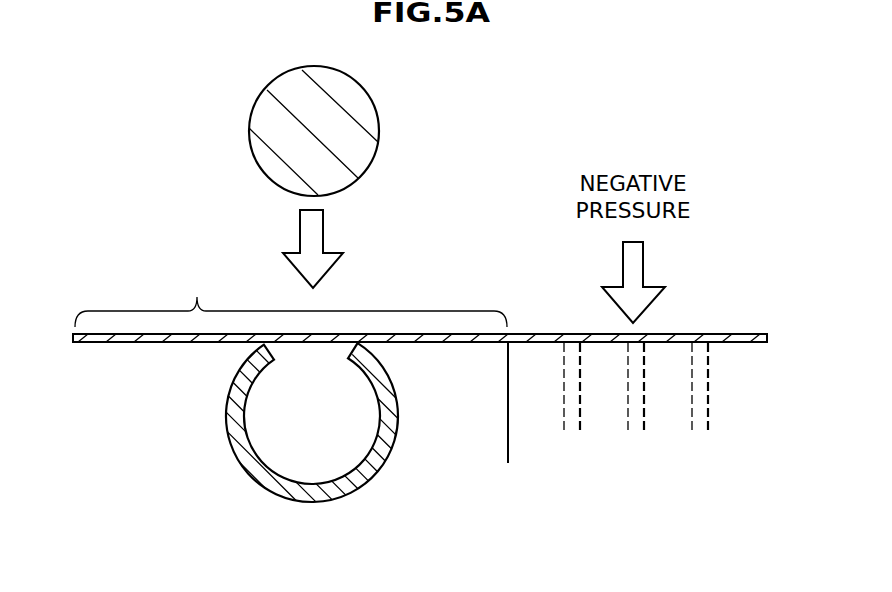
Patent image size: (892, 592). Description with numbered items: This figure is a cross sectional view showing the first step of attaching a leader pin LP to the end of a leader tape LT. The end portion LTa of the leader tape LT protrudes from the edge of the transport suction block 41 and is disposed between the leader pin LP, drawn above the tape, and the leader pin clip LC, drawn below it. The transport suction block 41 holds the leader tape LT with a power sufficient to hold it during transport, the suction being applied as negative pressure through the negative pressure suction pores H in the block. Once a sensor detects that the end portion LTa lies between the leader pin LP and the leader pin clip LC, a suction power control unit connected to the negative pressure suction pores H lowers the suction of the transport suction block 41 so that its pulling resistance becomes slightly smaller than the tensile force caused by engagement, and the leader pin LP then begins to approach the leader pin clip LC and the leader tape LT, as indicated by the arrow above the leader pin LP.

The leader pin LP is at (378, 118).
The end portion of the leader tape LTa is at (202, 270).
The leader tape LT is at (733, 337).
The transport suction block 41 is at (512, 390).
The negative pressure suction pores H is at (570, 428).
The leader pin clip LC is at (363, 487).